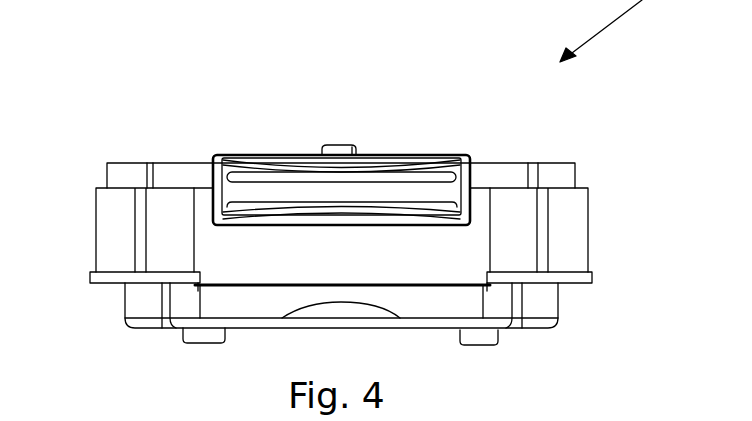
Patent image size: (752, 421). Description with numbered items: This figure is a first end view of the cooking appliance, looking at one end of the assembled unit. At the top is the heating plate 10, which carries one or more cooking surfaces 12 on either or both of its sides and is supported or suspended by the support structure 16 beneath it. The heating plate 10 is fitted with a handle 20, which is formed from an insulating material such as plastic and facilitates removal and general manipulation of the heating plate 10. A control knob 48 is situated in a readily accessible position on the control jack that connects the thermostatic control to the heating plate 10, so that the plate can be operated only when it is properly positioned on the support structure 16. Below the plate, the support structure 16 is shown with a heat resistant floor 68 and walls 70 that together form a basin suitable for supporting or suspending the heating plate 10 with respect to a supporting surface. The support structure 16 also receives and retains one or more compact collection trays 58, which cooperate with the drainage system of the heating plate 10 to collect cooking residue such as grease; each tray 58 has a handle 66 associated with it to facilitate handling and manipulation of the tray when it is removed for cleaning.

The heating plate 10 is at (577, 163).
The cooking surface 12 is at (155, 163).
The support structure 16 is at (568, 233).
The handle 20 is at (393, 200).
The control knob 48 is at (348, 145).
The collection tray 58 is at (265, 300).
The handle 66 is at (378, 307).
The heat resistant floor 68 is at (560, 322).
The walls 70 is at (540, 302).